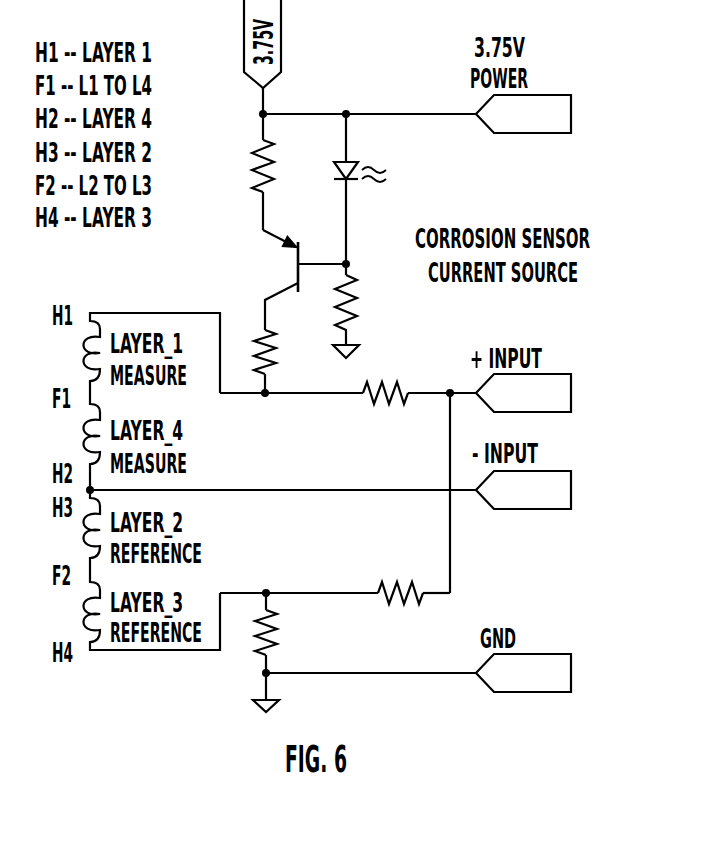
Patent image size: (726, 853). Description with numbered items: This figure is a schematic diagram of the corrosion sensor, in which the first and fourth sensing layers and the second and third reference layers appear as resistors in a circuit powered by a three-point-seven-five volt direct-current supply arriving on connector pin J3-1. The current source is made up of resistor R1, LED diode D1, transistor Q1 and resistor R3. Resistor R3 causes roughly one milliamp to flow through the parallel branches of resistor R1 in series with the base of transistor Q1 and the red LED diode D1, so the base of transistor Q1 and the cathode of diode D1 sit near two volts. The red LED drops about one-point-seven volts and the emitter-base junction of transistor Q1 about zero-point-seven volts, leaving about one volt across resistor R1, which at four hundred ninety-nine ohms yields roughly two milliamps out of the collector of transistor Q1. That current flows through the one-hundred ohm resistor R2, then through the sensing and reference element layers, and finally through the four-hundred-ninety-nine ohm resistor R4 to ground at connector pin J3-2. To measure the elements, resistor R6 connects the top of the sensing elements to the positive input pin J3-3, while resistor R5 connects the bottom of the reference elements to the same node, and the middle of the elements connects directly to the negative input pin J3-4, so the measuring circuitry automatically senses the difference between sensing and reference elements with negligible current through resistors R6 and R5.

The resistor R1 is at (282, 169).
The resistor R2 is at (284, 353).
The resistor R3 is at (363, 316).
The resistor R4 is at (286, 660).
The resistor R5 is at (393, 596).
The resistor R6 is at (389, 397).
The LED diode D1 is at (384, 173).
The transistor Q1 is at (245, 280).
The connector pin J3-1 3.75V power J3-1 is at (523, 114).
The connector pin J3-2 GND J3-2 is at (523, 673).
The connector pin J3-3 + input J3-3 is at (523, 393).
The connector pin J3-4 - input J3-4 is at (523, 490).